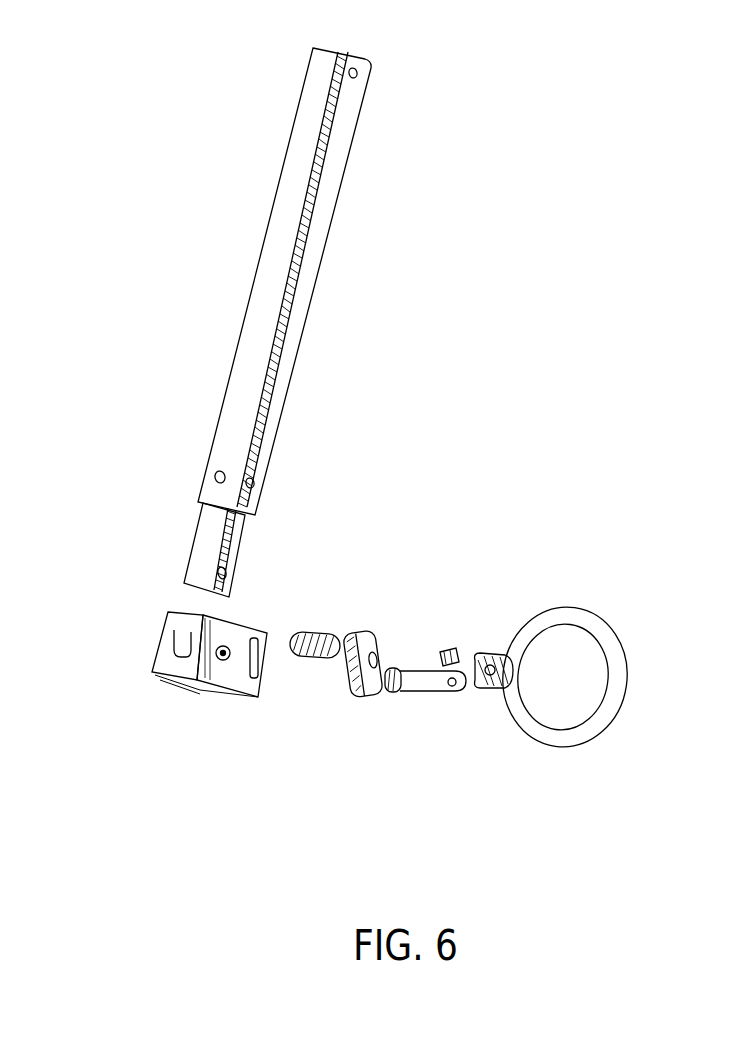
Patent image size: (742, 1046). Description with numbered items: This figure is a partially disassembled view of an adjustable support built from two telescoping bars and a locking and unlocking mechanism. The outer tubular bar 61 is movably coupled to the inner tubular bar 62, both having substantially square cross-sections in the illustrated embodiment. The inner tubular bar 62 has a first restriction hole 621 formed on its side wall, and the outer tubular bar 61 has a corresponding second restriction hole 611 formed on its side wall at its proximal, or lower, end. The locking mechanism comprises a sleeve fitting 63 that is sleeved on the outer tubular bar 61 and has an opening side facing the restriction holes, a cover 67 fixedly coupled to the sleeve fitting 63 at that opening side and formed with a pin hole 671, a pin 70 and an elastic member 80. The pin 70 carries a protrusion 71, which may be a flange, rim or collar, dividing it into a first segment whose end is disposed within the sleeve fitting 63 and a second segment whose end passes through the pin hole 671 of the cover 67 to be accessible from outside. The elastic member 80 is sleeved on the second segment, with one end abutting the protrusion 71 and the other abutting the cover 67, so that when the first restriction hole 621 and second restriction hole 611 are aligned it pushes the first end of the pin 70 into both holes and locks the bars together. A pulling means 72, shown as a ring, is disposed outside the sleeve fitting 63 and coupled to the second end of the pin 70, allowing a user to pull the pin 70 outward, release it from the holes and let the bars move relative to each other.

The outer tubular bar 61 is at (305, 268).
The second restriction hole 611 is at (252, 482).
The first restriction hole 621 is at (252, 482).
The inner tubular bar 62 is at (233, 540).
The sleeve fitting 63 is at (212, 697).
The elastic member 80 is at (310, 660).
The cover 67 is at (373, 680).
The pin hole 671 is at (373, 660).
The pin 70 is at (417, 682).
The protrusion 71 is at (407, 690).
The pulling means 72 is at (570, 623).